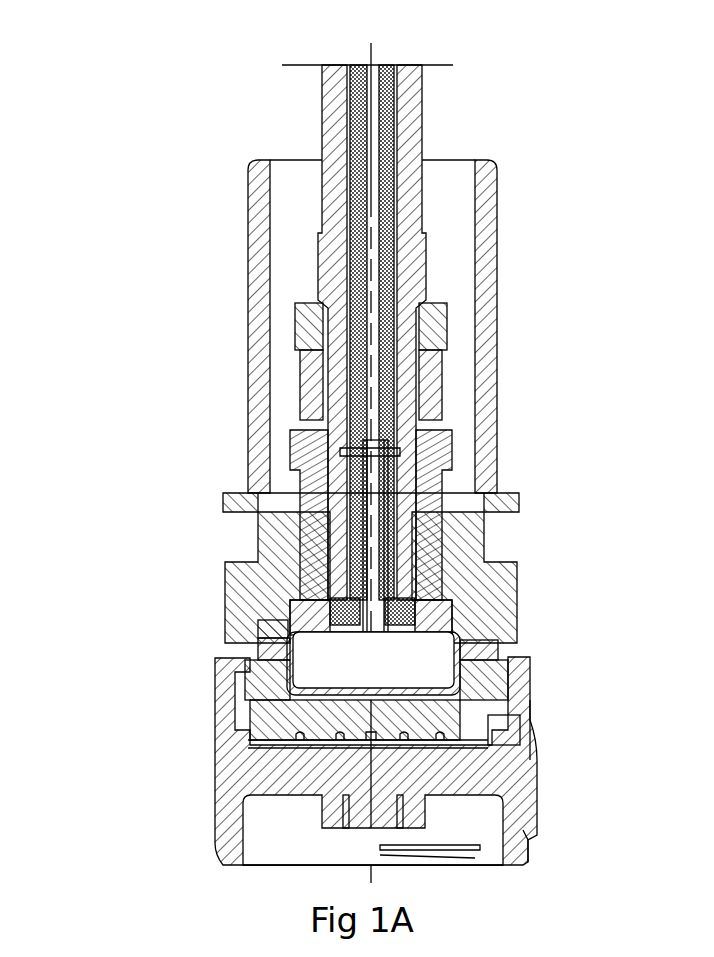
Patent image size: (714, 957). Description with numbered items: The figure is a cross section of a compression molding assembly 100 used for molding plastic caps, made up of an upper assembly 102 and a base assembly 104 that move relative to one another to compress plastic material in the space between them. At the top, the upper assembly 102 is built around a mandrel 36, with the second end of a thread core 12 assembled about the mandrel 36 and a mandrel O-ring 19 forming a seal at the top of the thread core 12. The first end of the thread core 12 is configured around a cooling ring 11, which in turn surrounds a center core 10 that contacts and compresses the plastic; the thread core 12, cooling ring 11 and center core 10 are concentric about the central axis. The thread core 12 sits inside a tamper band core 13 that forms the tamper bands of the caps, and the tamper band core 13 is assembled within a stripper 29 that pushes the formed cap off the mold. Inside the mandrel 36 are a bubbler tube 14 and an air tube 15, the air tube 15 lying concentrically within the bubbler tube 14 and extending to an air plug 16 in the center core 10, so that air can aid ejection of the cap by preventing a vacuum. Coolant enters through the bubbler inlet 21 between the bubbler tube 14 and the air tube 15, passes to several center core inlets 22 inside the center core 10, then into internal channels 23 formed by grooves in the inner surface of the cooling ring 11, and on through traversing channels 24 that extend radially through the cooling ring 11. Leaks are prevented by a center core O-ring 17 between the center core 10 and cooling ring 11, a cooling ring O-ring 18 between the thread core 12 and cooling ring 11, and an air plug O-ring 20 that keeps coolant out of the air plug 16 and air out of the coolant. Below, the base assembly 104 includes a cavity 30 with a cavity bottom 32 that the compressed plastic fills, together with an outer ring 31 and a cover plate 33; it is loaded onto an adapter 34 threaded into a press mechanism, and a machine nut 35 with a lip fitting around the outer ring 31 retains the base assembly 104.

The compression molding assembly 100 is at (100, 85).
The upper assembly 102 is at (132, 262).
The base assembly 104 is at (116, 708).
The center core 10 is at (498, 652).
The cooling ring 11 is at (485, 680).
The thread core 12 is at (432, 612).
The tamper band core 13 is at (453, 570).
The bubbler tube 14 is at (405, 518).
The air tube 15 is at (380, 455).
The air plug 16 is at (455, 628).
The center core O-ring 17 is at (300, 683).
The cooling ring O-ring 18 is at (285, 668).
The mandrel O-ring 19 is at (330, 420).
The air plug O-ring 20 is at (283, 627).
The bubbler inlet 21 is at (358, 402).
The center core inlets 22 is at (310, 590).
The internal channels 23 is at (300, 640).
The traversing channels 24 is at (265, 645).
The stripper 29 is at (483, 375).
The cavity 30 is at (463, 713).
The outer ring 31 is at (488, 687).
The cavity bottom 32 is at (487, 742).
The cover plate 33 is at (447, 743).
The adapter 34 is at (467, 775).
The machine nut 35 is at (528, 837).
The mandrel 36 is at (413, 257).